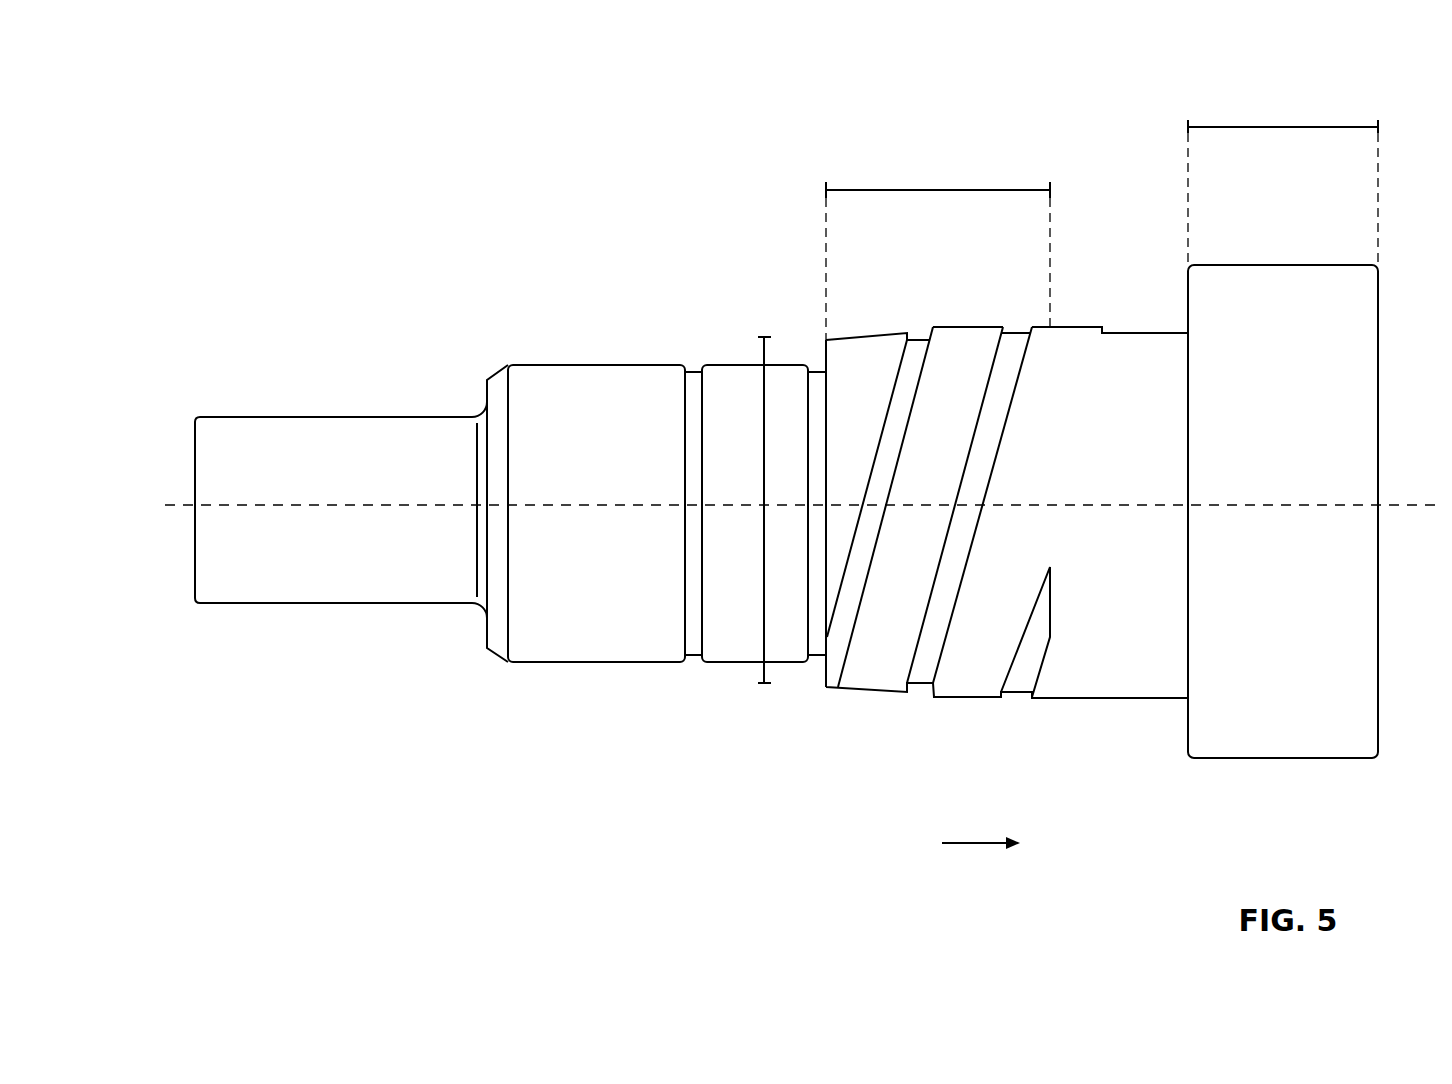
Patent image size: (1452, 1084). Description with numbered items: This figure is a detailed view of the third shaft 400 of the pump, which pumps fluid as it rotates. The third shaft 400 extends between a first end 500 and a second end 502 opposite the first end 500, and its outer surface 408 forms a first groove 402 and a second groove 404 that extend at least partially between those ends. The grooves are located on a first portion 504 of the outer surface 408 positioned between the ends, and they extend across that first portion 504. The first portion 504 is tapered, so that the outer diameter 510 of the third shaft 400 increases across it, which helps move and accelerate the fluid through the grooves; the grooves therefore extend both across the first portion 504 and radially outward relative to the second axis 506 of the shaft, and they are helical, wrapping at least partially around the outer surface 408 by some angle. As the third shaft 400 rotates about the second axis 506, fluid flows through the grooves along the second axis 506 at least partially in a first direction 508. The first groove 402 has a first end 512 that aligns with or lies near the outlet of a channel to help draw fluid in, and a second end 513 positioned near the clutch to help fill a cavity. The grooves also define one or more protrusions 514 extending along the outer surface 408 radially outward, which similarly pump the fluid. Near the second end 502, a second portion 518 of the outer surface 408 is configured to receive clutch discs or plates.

The third shaft 400 is at (549, 394).
The first groove 402 is at (914, 331).
The second groove 404 is at (926, 704).
The outer surface 408 is at (617, 574).
The first end 500 is at (193, 450).
The second end 502 is at (1378, 440).
The first portion 504 is at (943, 190).
The second axis 506 is at (177, 508).
The first direction 508 is at (977, 843).
The outer diameter 510 is at (764, 487).
The first end of first groove 512 is at (825, 673).
The second end of first groove 513 is at (1052, 597).
The protrusion 514 is at (963, 327).
The second portion 518 is at (1290, 127).